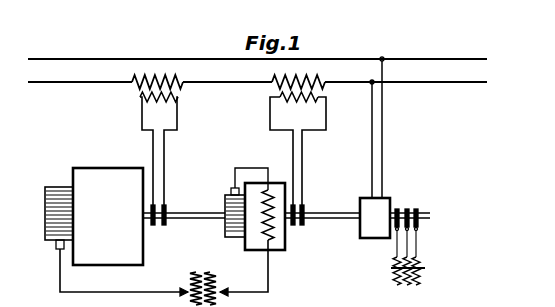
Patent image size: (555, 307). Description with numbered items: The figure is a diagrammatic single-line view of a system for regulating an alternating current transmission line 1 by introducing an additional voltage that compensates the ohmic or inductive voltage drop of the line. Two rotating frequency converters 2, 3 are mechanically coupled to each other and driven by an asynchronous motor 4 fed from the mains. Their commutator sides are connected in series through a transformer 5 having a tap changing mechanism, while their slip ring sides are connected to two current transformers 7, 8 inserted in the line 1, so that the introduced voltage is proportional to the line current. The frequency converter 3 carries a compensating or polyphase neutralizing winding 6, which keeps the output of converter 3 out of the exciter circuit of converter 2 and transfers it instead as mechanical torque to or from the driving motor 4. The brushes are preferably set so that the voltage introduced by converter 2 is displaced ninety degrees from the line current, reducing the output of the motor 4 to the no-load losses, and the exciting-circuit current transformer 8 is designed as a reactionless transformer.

The alternating current transmission line 1 is at (264, 70).
The rotating frequency converter 2 is at (87, 178).
The rotating frequency converter 3 is at (283, 251).
The asynchronous motor 4 is at (385, 200).
The transformer with tap changing mechanism 5 is at (203, 272).
The compensating winding 6 is at (265, 228).
The current transformer 7 is at (148, 88).
The current transformer 8 is at (308, 88).